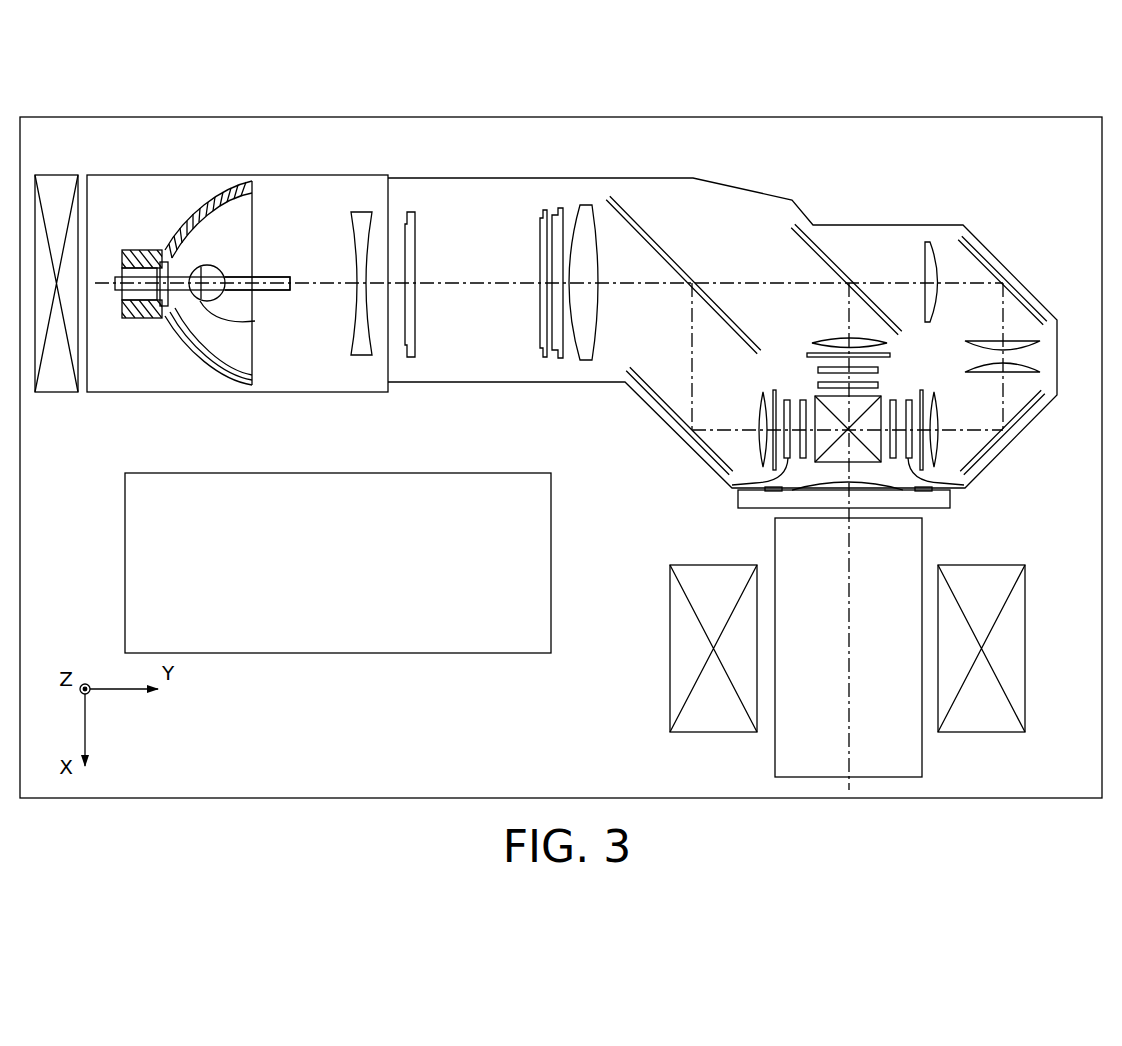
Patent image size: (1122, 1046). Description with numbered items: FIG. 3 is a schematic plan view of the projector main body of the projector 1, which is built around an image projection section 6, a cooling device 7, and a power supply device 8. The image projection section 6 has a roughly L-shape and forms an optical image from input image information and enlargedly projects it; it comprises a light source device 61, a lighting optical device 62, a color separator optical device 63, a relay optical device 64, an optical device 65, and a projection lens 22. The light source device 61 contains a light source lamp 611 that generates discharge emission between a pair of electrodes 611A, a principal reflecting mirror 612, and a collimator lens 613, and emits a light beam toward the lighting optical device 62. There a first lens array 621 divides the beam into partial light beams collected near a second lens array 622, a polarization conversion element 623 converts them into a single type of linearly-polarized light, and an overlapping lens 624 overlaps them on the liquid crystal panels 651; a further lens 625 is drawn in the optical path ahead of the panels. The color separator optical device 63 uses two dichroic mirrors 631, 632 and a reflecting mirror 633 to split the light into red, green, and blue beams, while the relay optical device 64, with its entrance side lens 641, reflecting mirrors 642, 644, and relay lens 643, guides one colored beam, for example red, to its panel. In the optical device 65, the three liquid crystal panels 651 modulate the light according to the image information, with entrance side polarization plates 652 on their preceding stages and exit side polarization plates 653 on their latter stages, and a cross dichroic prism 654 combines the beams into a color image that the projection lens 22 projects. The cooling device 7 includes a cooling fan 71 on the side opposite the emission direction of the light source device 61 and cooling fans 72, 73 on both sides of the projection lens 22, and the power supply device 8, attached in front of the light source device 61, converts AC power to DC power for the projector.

The projector 1 is at (872, 94).
The image projection section 6 is at (558, 388).
The cooling device 7 is at (560, 441).
The power supply device 8 is at (421, 655).
The projection lens 22 is at (922, 748).
The light source device 61 is at (335, 78).
The light source lamp 611 is at (253, 273).
The electrodes 611A is at (263, 298).
The principal reflecting mirror 612 is at (228, 180).
The collimator lens 613 is at (360, 212).
The lighting optical device 62 is at (529, 218).
The first lens array 621 is at (418, 247).
The second lens array 622 is at (545, 213).
The polarization conversion element 623 is at (560, 215).
The overlapping lens 624 is at (590, 238).
The field lens 625 is at (802, 345).
The color separator optical device 63 is at (756, 306).
The dichroic mirror 631 is at (650, 226).
The dichroic mirror 632 is at (832, 262).
The reflecting mirror 633 is at (652, 386).
The relay optical device 64 is at (998, 340).
The entrance side lens 641 is at (931, 243).
The reflecting mirror 642 is at (1012, 300).
The relay lens 643 is at (1040, 366).
The reflecting mirror 644 is at (1040, 408).
The optical device 65 is at (852, 436).
The liquid crystal panels 651 is at (815, 370).
The entrance side polarization plates 652 is at (733, 480).
The exit side polarization plates 653 is at (878, 385).
The cross dichroic prism 654 is at (855, 455).
The cooling fan 71 is at (62, 393).
The cooling fan 72 is at (670, 698).
The cooling fan 73 is at (1025, 700).